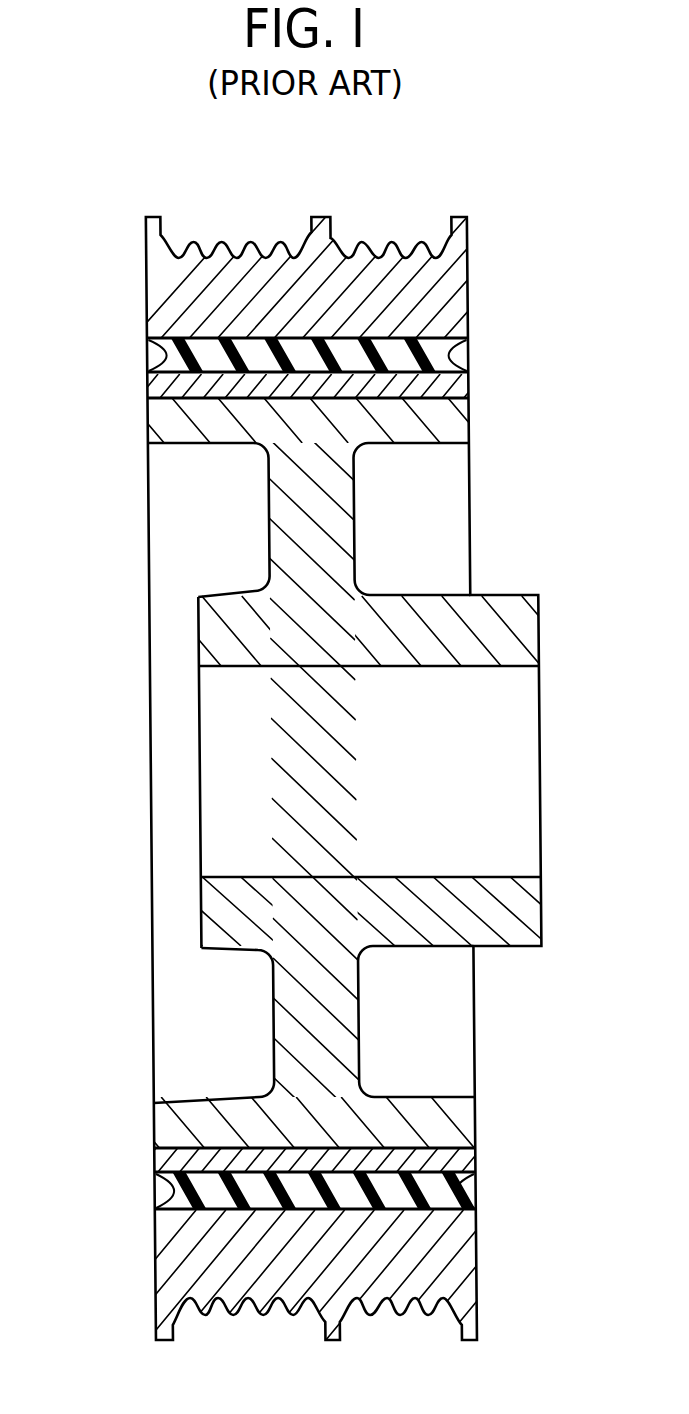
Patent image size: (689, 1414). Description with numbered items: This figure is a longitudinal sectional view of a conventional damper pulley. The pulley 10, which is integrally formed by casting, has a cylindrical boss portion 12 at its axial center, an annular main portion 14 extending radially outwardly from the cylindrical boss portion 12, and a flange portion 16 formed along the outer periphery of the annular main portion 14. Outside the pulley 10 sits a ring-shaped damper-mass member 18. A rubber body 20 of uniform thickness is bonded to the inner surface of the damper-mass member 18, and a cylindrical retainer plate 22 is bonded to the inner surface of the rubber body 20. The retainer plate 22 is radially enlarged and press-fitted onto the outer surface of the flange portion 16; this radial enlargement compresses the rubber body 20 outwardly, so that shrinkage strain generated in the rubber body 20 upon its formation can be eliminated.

The pulley 10 is at (230, 462).
The cylindrical boss portion 12 is at (468, 594).
The annular main portion 14 is at (317, 525).
The flange portion 16 is at (407, 430).
The damper-mass member 18 is at (362, 288).
The rubber body 20 is at (432, 360).
The retainer plate 22 is at (177, 385).